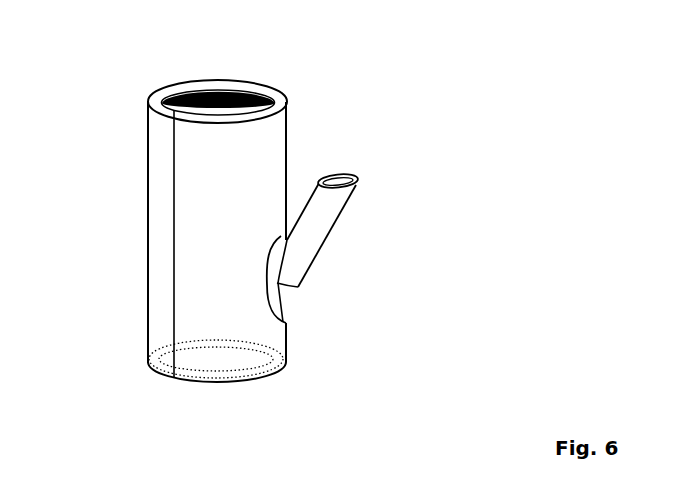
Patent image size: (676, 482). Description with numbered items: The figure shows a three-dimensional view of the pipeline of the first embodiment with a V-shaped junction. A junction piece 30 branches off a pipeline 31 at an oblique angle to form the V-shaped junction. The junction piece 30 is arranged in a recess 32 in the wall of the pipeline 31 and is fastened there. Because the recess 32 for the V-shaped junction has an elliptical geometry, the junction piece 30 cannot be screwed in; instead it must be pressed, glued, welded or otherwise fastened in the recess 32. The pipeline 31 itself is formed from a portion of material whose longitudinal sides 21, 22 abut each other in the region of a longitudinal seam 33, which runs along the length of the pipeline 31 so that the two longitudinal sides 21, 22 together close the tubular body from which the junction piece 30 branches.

The longitudinal side 21 is at (153, 138).
The longitudinal side 22 is at (184, 217).
The junction piece 30 is at (318, 228).
The pipeline 31 is at (240, 36).
The recess 32 is at (298, 287).
The longitudinal seam 33 is at (174, 262).